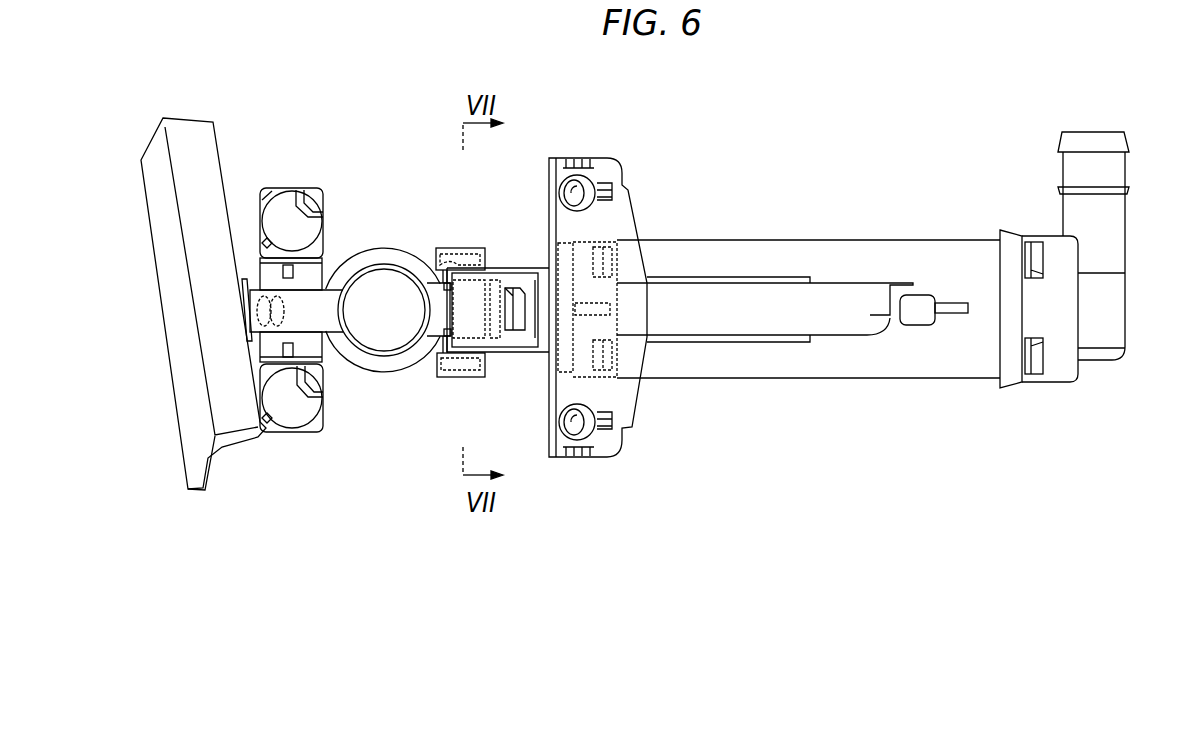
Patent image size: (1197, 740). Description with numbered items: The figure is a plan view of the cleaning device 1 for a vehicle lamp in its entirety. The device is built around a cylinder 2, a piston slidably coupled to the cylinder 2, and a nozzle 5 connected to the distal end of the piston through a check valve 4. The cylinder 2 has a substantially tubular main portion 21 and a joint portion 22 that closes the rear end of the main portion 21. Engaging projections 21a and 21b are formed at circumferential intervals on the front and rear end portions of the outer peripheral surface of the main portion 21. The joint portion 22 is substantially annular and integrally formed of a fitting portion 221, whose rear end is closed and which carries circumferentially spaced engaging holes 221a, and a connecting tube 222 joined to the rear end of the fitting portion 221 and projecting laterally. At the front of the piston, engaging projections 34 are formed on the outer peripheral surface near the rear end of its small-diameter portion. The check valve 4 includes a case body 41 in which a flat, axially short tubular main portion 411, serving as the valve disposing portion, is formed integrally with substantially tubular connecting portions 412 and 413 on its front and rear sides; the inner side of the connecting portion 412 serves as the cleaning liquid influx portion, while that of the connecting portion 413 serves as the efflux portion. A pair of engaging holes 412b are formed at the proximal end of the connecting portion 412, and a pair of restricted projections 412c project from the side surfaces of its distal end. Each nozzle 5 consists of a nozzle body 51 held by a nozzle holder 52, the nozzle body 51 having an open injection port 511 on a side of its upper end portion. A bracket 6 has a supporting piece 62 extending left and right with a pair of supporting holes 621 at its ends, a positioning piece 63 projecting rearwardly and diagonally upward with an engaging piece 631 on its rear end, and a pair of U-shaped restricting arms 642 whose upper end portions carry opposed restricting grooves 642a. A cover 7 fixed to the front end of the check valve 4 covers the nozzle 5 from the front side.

The cleaning device 1 is at (900, 165).
The cylinder 2 is at (813, 232).
The check valve 4 is at (378, 240).
The nozzle 5 is at (284, 180).
The bracket 6 is at (636, 454).
The cover 7 is at (189, 130).
The main portion 21 is at (892, 376).
The engaging projection 21a is at (615, 260).
The engaging projection 21b is at (1040, 252).
The joint portion 22 is at (1066, 375).
The engaging projection 34 is at (519, 328).
The case body 41 is at (396, 373).
The nozzle body 51 is at (274, 206).
The nozzle holder 52 is at (326, 270).
The supporting piece 62 is at (608, 393).
The positioning piece 63 is at (768, 318).
The fitting portion 221 is at (1028, 344).
The engaging hole 221a is at (1036, 376).
The connecting tube 222 is at (1122, 292).
The main portion 411 is at (382, 345).
The connecting portion 412 is at (495, 348).
The engaging hole 412b is at (528, 302).
The restricted projection 412c is at (476, 260).
The connecting portion 413 is at (310, 318).
The injection port 511 is at (300, 192).
The supporting hole 621 is at (585, 190).
The engaging piece 631 is at (958, 315).
The restricting arm 642 is at (445, 250).
The restricting groove 642a is at (428, 366).